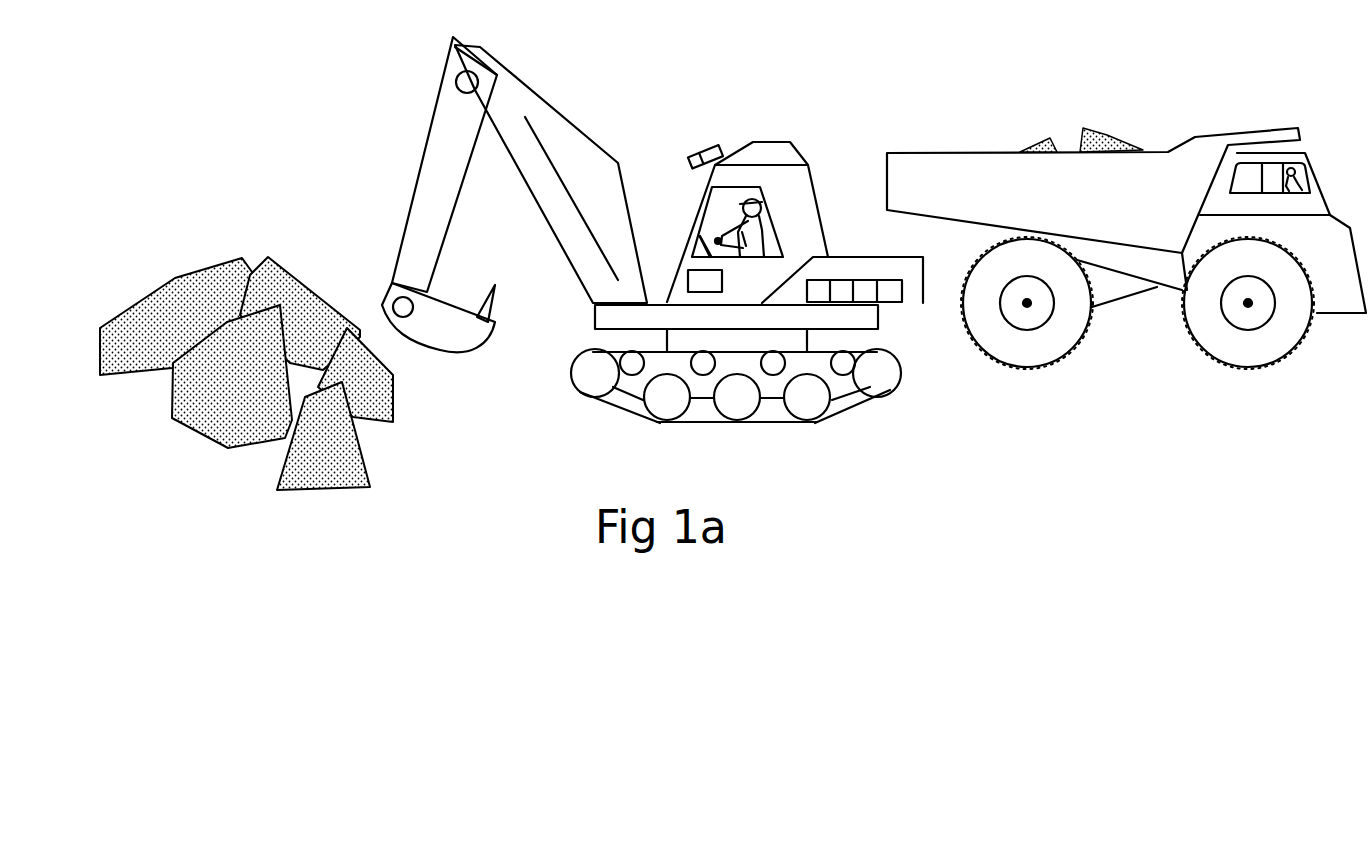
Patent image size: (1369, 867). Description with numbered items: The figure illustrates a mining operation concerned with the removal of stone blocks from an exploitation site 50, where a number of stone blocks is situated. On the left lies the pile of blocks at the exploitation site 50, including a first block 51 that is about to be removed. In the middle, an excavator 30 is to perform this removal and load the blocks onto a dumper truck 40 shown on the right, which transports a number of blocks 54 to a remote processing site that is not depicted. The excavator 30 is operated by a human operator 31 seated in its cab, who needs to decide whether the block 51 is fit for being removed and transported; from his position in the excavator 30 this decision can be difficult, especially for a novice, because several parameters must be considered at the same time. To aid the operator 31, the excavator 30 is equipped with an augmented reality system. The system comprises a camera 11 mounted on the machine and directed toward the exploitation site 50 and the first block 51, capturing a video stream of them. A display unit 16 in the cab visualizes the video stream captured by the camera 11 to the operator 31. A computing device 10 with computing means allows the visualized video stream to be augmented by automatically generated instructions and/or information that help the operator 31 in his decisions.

The computing device 10 is at (666, 208).
The camera 11 is at (672, 123).
The display unit 16 is at (756, 173).
The excavator 30 is at (652, 230).
The human operator 31 is at (795, 220).
The dumper truck 40 is at (1126, 218).
The exploitation site 50 is at (280, 342).
The first block 51 is at (389, 403).
The blocks 54 is at (1098, 121).